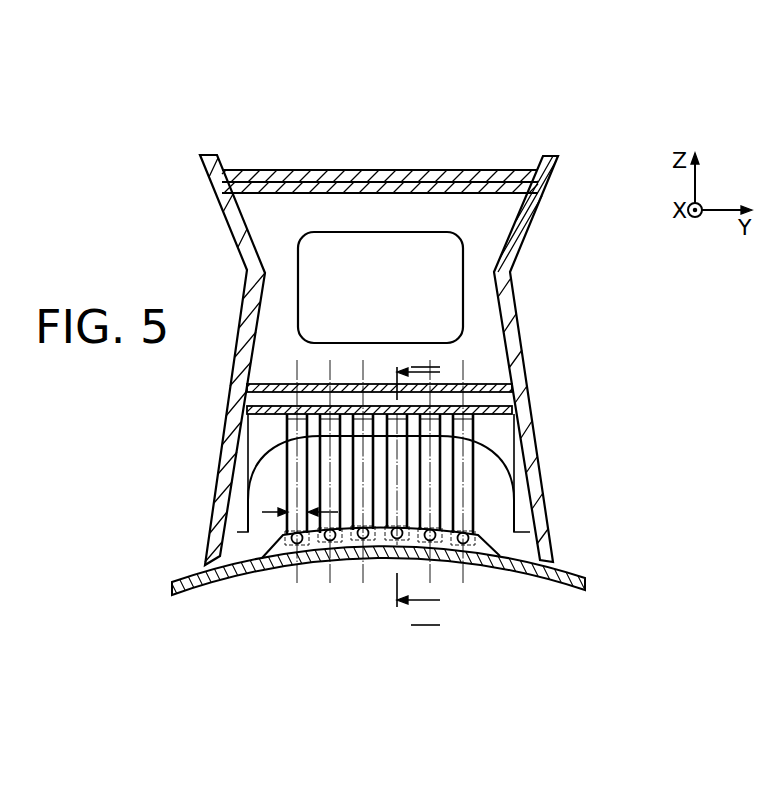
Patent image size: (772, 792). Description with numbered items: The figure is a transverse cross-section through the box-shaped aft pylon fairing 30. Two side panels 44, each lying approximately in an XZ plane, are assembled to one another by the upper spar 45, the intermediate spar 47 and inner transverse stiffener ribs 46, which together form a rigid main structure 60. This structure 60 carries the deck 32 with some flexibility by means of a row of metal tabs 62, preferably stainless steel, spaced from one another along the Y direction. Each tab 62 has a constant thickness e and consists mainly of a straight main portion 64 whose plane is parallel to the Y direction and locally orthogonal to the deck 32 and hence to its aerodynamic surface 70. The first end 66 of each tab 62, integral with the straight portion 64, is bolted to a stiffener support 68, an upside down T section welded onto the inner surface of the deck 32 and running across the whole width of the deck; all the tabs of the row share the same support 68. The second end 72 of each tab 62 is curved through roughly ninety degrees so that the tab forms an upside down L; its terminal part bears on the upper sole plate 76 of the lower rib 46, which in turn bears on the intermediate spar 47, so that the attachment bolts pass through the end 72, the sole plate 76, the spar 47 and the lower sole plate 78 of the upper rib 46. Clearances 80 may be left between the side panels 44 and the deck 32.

The aft pylon fairing 30 is at (268, 131).
The deck 32 is at (259, 571).
The side panels 44 is at (206, 170).
The upper spar 45 is at (385, 170).
The inner transverse stiffener ribs 46 is at (488, 348).
The intermediate spar 47 is at (503, 403).
The main structure 60 is at (526, 236).
The metal tabs 62 is at (434, 487).
The straight main portion 64 is at (340, 550).
The first end 66 is at (304, 550).
The stiffener support 68 is at (473, 570).
The aerodynamic surface 70 is at (222, 588).
The second end 72 is at (346, 412).
The upper sole plate 76 is at (244, 414).
The lower sole plate 78 is at (497, 381).
The clearances 80 is at (208, 562).
The thickness e is at (262, 512).